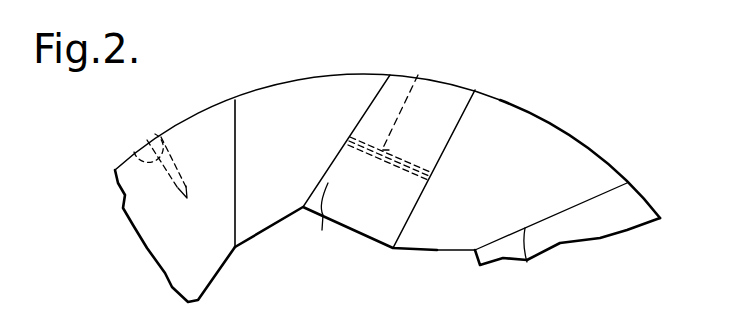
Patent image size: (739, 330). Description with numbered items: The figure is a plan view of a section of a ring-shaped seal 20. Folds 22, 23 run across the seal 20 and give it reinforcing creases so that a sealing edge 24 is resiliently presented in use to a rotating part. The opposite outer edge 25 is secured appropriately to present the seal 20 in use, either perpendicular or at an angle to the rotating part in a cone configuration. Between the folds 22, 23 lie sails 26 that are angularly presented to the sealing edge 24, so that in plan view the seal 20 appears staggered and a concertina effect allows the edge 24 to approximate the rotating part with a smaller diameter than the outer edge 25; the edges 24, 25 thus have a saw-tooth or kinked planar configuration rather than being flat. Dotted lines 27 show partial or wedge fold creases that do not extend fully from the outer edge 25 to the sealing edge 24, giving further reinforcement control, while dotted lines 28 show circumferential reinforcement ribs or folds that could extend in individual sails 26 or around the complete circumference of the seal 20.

The seal 20 is at (519, 99).
The fold 22 is at (236, 128).
The fold 23 is at (468, 239).
The sealing edge 24 is at (222, 272).
The outer edge 25 is at (183, 124).
The sail 26 is at (332, 103).
The partial or wedge fold crease 27 is at (132, 160).
The circumferential reinforcement rib or fold 28 is at (418, 75).